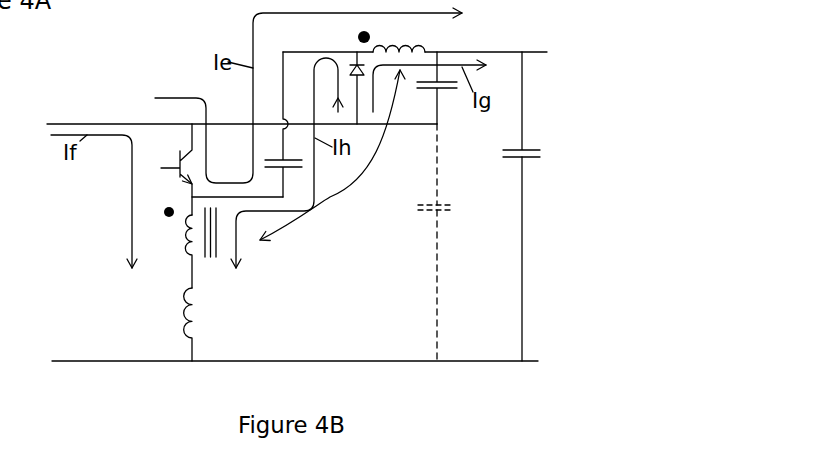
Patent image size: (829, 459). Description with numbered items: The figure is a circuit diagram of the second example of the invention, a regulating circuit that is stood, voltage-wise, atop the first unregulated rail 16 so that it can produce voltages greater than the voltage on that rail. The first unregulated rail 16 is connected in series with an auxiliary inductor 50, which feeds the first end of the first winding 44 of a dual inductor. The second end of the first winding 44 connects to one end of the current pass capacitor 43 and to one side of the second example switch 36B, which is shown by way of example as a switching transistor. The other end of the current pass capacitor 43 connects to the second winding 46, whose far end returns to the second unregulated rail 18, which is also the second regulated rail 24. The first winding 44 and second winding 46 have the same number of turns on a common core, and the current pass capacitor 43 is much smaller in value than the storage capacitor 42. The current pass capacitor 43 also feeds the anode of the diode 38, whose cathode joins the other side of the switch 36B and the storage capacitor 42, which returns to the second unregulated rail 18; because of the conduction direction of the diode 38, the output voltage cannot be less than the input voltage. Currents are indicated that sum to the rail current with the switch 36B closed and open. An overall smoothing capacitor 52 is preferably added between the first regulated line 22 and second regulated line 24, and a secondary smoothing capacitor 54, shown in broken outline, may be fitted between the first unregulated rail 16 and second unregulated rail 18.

The first unregulated rail 16 is at (72, 124).
The second unregulated rail 18 is at (72, 361).
The first regulated line 22 is at (530, 52).
The second regulated rail 24 is at (535, 361).
The second example switch 36B is at (182, 167).
The diode 38 is at (353, 68).
The storage capacitor 42 is at (438, 93).
The current pass capacitor 43 is at (267, 164).
The first winding 44 is at (190, 222).
The second winding 46 is at (412, 49).
The auxiliary inductor 50 is at (186, 315).
The overall smoothing capacitor 52 is at (512, 160).
The secondary smoothing capacitor 54 is at (432, 212).